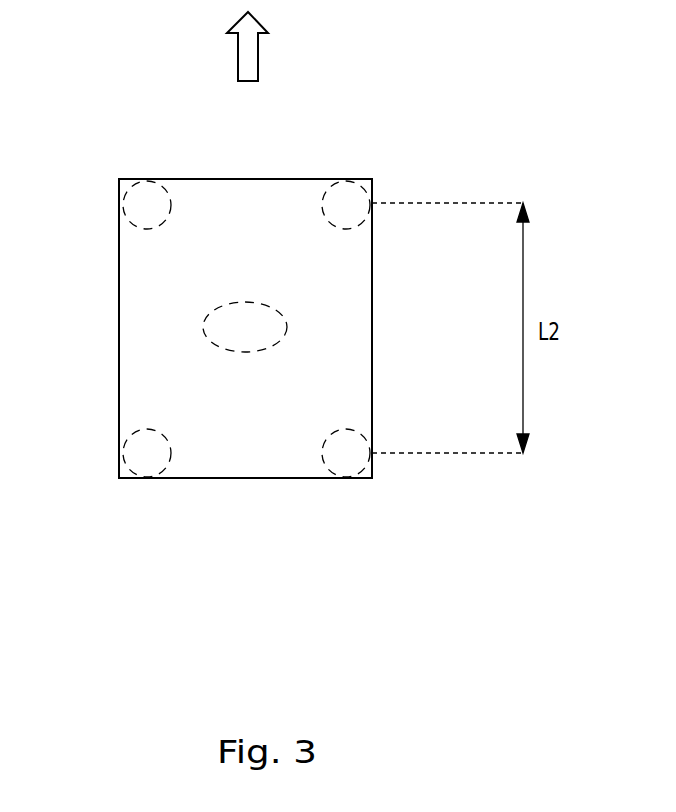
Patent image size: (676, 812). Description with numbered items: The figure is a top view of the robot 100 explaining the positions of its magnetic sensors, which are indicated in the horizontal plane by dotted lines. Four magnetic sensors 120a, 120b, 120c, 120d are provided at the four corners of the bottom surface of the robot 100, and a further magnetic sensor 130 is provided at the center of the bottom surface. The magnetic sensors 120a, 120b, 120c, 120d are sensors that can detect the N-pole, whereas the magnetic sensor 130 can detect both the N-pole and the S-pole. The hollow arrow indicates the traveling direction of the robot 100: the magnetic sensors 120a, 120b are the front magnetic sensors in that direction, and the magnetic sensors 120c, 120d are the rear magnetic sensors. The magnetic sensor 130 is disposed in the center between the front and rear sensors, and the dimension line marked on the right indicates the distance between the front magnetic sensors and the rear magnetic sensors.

The robot 100 is at (262, 179).
The magnetic sensor 120a is at (136, 228).
The magnetic sensor 120b is at (357, 228).
The magnetic sensor 120c is at (137, 431).
The magnetic sensor 120d is at (358, 431).
The magnetic sensor 130 is at (238, 354).